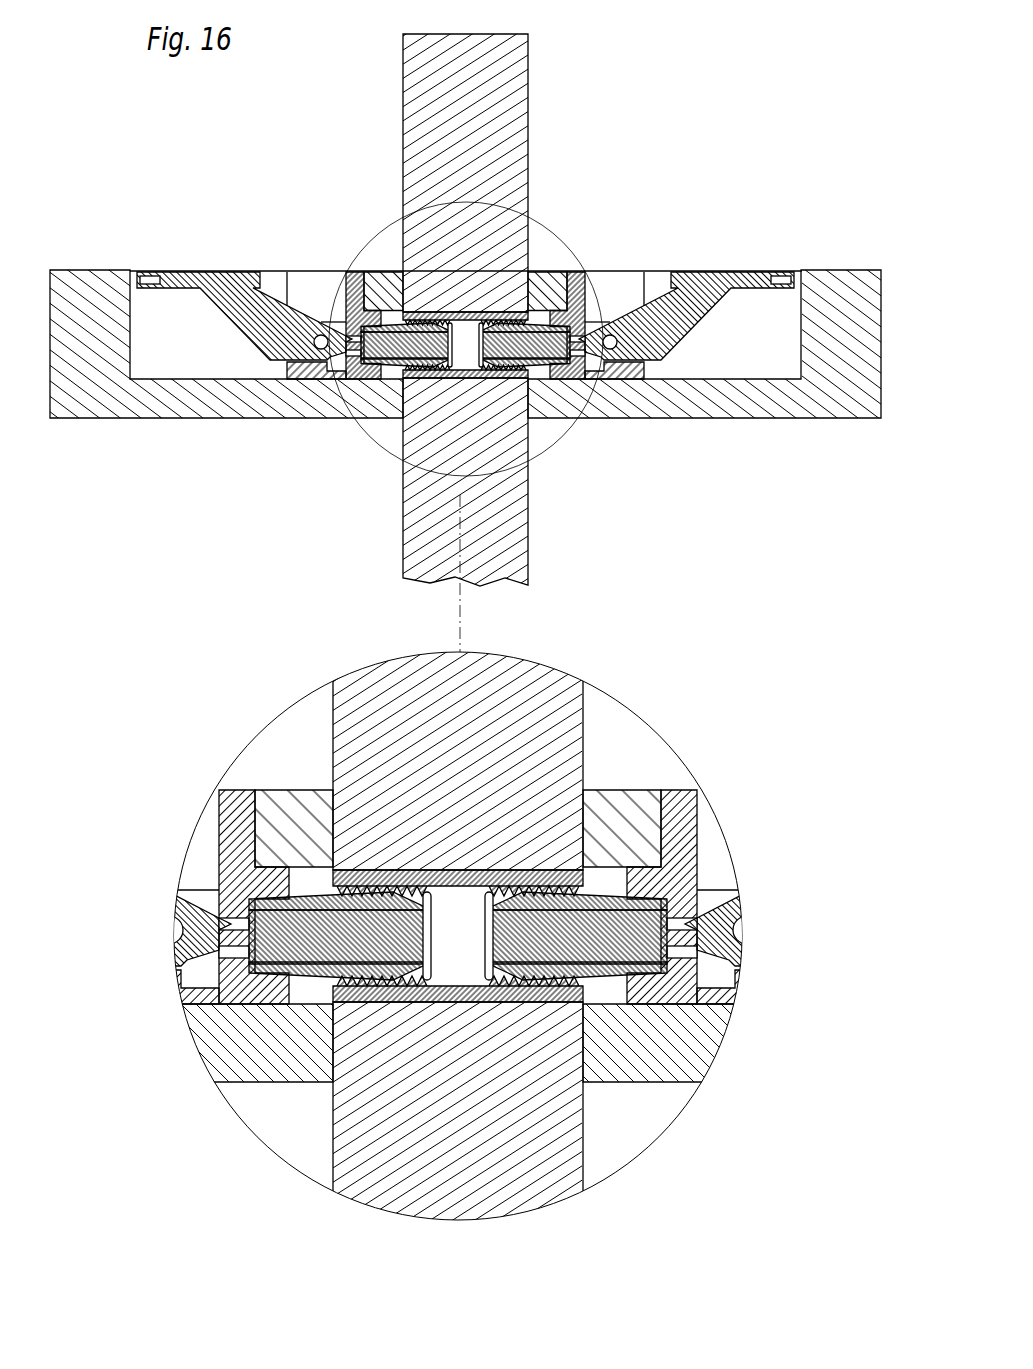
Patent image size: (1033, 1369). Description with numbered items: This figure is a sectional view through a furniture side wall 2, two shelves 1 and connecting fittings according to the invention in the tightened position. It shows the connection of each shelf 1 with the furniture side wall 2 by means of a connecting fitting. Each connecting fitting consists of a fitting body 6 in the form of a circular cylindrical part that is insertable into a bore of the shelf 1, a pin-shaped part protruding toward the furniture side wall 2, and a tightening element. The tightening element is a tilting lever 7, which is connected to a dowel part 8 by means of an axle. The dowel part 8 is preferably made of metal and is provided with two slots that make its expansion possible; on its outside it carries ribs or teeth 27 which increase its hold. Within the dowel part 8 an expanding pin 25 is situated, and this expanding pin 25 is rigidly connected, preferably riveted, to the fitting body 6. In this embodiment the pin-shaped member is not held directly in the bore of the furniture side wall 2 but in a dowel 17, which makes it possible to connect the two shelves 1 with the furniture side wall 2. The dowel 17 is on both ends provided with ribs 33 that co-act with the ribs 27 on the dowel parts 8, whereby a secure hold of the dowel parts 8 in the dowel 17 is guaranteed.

The shelf 1 is at (93, 332).
The furniture side wall 2 is at (507, 78).
The fitting body 6 is at (317, 290).
The tilting lever 7 is at (178, 278).
The dowel part 8 is at (602, 897).
The dowel 17 is at (477, 305).
The expanding pin 25 is at (613, 927).
The ribs or teeth 27 is at (583, 853).
The ribs 33 is at (497, 982).